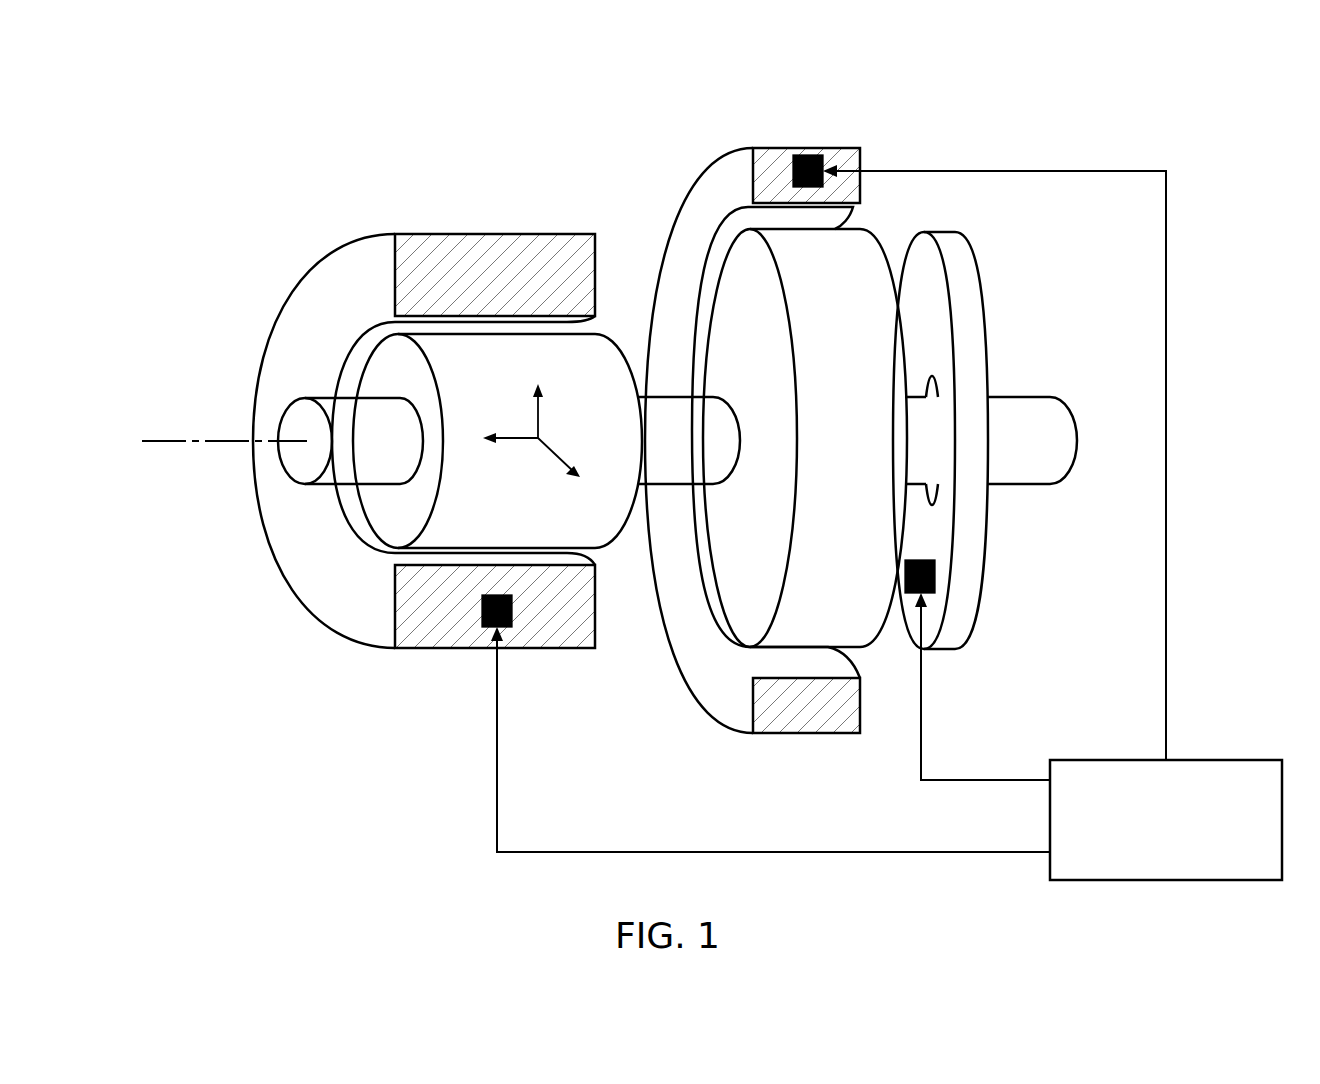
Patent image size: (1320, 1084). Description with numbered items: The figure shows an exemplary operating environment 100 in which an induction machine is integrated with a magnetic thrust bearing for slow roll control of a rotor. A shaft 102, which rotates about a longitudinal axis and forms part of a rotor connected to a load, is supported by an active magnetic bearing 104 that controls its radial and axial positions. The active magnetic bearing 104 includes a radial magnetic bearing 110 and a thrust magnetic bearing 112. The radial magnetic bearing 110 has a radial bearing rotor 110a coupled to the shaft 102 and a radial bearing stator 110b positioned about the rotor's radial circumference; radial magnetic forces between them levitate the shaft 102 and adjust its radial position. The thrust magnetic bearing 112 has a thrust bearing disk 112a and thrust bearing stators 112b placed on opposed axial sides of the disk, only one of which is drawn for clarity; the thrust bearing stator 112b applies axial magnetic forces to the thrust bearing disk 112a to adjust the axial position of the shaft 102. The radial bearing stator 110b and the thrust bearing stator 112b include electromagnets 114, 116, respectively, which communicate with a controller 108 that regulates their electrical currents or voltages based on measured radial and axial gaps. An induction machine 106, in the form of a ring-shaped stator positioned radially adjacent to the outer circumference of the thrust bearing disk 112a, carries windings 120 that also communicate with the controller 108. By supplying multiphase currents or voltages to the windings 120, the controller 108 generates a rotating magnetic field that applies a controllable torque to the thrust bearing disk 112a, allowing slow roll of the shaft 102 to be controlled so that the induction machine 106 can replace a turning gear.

The operating environment 100 is at (264, 144).
The shaft 102 is at (347, 452).
The active magnetic bearing 104 is at (403, 118).
The induction machine 106 is at (787, 718).
The controller 108 is at (1145, 832).
The radial magnetic bearing 110 is at (393, 222).
The radial bearing rotor 110a is at (505, 518).
The radial bearing stator 110b is at (357, 318).
The thrust magnetic bearing 112 is at (748, 228).
The thrust bearing disk 112a is at (870, 443).
The thrust bearing stator 112b is at (960, 291).
The electromagnet 114 is at (478, 649).
The electromagnet 116 is at (937, 576).
The windings 120 is at (792, 175).